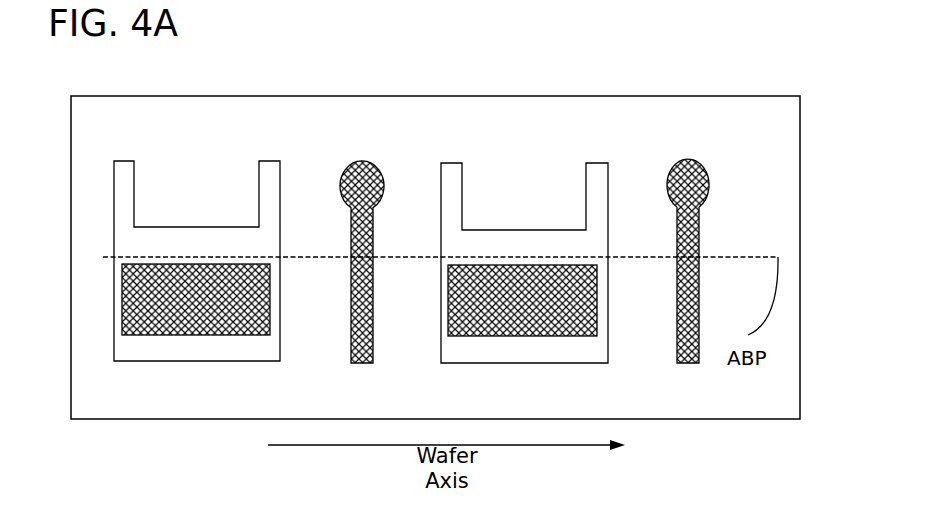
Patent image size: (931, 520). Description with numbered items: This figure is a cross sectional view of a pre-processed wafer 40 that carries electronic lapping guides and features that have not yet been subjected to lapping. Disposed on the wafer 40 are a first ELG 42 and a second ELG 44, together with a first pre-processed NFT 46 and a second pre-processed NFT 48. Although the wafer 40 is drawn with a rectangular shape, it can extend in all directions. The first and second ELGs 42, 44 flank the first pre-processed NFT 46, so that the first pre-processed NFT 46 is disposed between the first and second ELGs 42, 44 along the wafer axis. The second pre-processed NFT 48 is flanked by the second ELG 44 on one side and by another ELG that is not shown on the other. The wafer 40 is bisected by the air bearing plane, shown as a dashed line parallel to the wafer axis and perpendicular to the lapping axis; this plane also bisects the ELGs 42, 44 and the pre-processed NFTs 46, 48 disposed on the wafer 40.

The wafer 40 is at (540, 130).
The first ELG 42 is at (130, 160).
The second ELG 44 is at (608, 165).
The first pre-processed NFT 46 is at (347, 160).
The second pre-processed NFT 48 is at (710, 190).